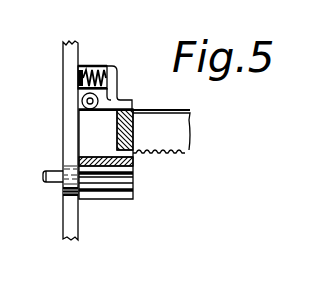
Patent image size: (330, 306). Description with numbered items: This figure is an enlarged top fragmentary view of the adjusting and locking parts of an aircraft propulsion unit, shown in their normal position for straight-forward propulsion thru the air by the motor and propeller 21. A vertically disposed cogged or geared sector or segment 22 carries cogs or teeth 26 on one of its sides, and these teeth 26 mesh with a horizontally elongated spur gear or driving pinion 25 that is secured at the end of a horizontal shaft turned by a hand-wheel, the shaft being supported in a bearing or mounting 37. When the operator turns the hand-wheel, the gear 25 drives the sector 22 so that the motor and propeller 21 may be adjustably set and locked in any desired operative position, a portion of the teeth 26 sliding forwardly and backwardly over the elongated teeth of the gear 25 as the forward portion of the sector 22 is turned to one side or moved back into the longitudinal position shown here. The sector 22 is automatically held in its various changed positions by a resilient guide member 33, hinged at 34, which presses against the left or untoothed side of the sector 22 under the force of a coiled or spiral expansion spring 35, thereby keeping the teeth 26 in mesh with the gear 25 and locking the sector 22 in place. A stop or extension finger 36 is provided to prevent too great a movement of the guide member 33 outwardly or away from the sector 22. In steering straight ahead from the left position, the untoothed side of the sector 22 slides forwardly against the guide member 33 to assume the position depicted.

The propeller 21 is at (54, 172).
The cogged or geared sector or segment 22 is at (177, 129).
The spur gear or driving pinion 25 is at (113, 197).
The cogs or teeth 26 is at (177, 153).
The resilient or automatic guide member 33 is at (128, 105).
The hinge 34 is at (82, 101).
The coiled or spiral expansion spring 35 is at (113, 70).
The stop or extension finger 36 is at (96, 65).
The bearing or mounting 37 is at (62, 191).